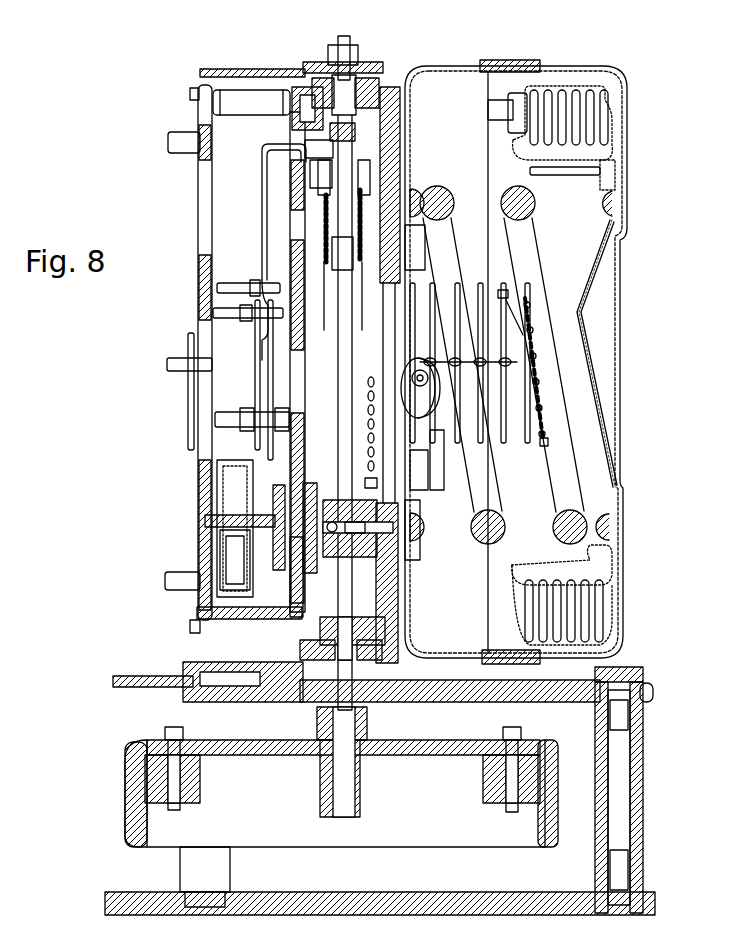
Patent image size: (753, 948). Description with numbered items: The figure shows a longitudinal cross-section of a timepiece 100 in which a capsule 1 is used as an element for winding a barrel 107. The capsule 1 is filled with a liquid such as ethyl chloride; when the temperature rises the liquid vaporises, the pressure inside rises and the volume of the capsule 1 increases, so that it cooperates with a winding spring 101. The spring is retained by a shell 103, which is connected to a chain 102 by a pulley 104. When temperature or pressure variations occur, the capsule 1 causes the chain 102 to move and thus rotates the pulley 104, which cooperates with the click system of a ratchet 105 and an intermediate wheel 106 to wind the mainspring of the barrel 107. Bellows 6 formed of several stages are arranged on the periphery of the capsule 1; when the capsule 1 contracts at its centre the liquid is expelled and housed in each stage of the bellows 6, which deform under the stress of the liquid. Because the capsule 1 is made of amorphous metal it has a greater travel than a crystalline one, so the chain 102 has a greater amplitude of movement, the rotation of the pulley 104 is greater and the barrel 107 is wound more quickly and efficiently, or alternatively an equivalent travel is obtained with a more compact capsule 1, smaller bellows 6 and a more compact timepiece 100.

The timepiece 100 is at (174, 76).
The capsule 1 is at (614, 257).
The bellows 6 is at (607, 93).
The winding spring 101 is at (516, 322).
The chain 102 is at (546, 390).
The shell 103 is at (546, 445).
The pulley 104 is at (373, 373).
The ratchet 105 is at (293, 587).
The intermediate wheel 106 is at (272, 497).
The barrel 107 is at (233, 547).